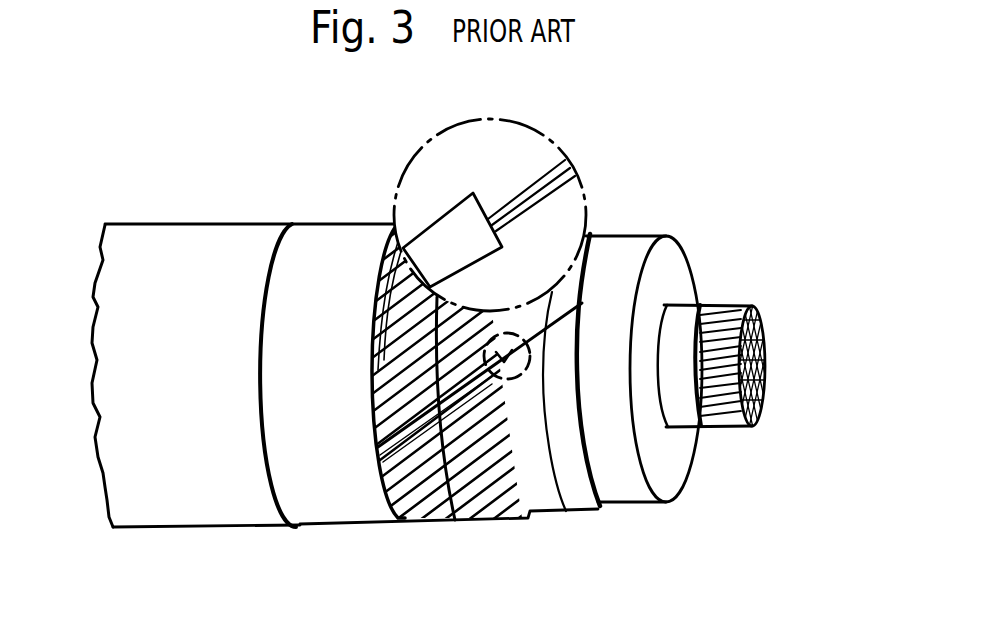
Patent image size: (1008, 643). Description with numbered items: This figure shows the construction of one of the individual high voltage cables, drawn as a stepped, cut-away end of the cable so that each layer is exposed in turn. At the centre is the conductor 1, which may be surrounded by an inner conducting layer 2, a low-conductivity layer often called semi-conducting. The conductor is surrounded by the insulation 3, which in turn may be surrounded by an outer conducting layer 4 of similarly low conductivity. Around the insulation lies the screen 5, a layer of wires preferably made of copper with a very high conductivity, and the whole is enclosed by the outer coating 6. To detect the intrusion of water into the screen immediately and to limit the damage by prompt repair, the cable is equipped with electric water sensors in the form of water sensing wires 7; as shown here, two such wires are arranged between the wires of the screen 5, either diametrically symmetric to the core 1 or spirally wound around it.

The conductor 1 is at (767, 362).
The inner conducting layer 2 is at (683, 315).
The insulation 3 is at (622, 256).
The outer conducting layer 4 is at (545, 490).
The screen 5 is at (473, 460).
The outer coating 6 is at (190, 257).
The water sensing wires 7 is at (438, 240).